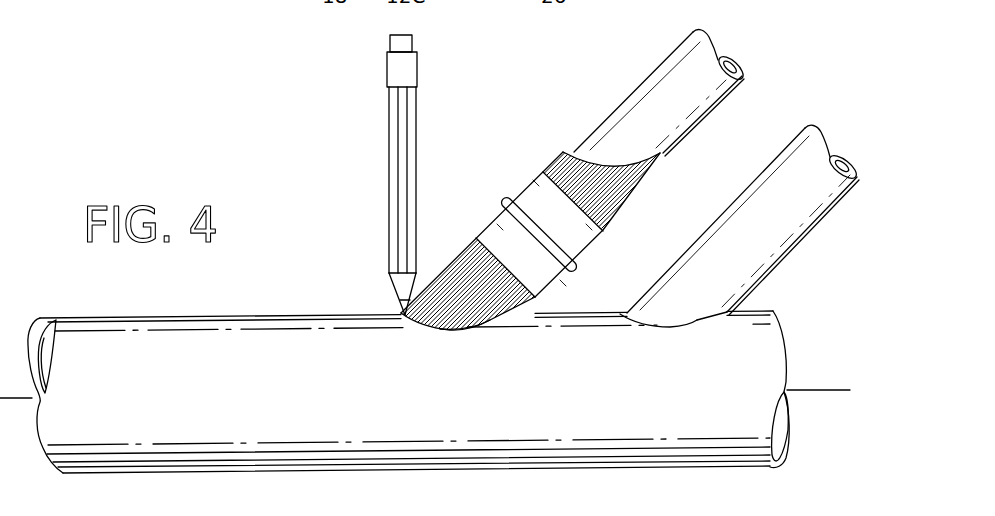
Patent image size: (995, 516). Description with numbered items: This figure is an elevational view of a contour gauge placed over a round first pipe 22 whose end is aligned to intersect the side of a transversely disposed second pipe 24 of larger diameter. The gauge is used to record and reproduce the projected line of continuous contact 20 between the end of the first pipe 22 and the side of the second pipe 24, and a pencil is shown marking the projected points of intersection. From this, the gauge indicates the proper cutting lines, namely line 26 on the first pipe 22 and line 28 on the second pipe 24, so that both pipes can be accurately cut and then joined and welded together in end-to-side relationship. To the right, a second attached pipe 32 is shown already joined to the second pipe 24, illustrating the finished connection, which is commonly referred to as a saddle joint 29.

The projected line of continuous contact 20 is at (468, 338).
The first pipe 22 is at (679, 47).
The second pipe 24 is at (288, 317).
The cutting line on pipe 22 26 is at (617, 162).
The cutting line on pipe 24 28 is at (432, 327).
The saddle joint 29 is at (677, 346).
The pipe 32 is at (804, 133).